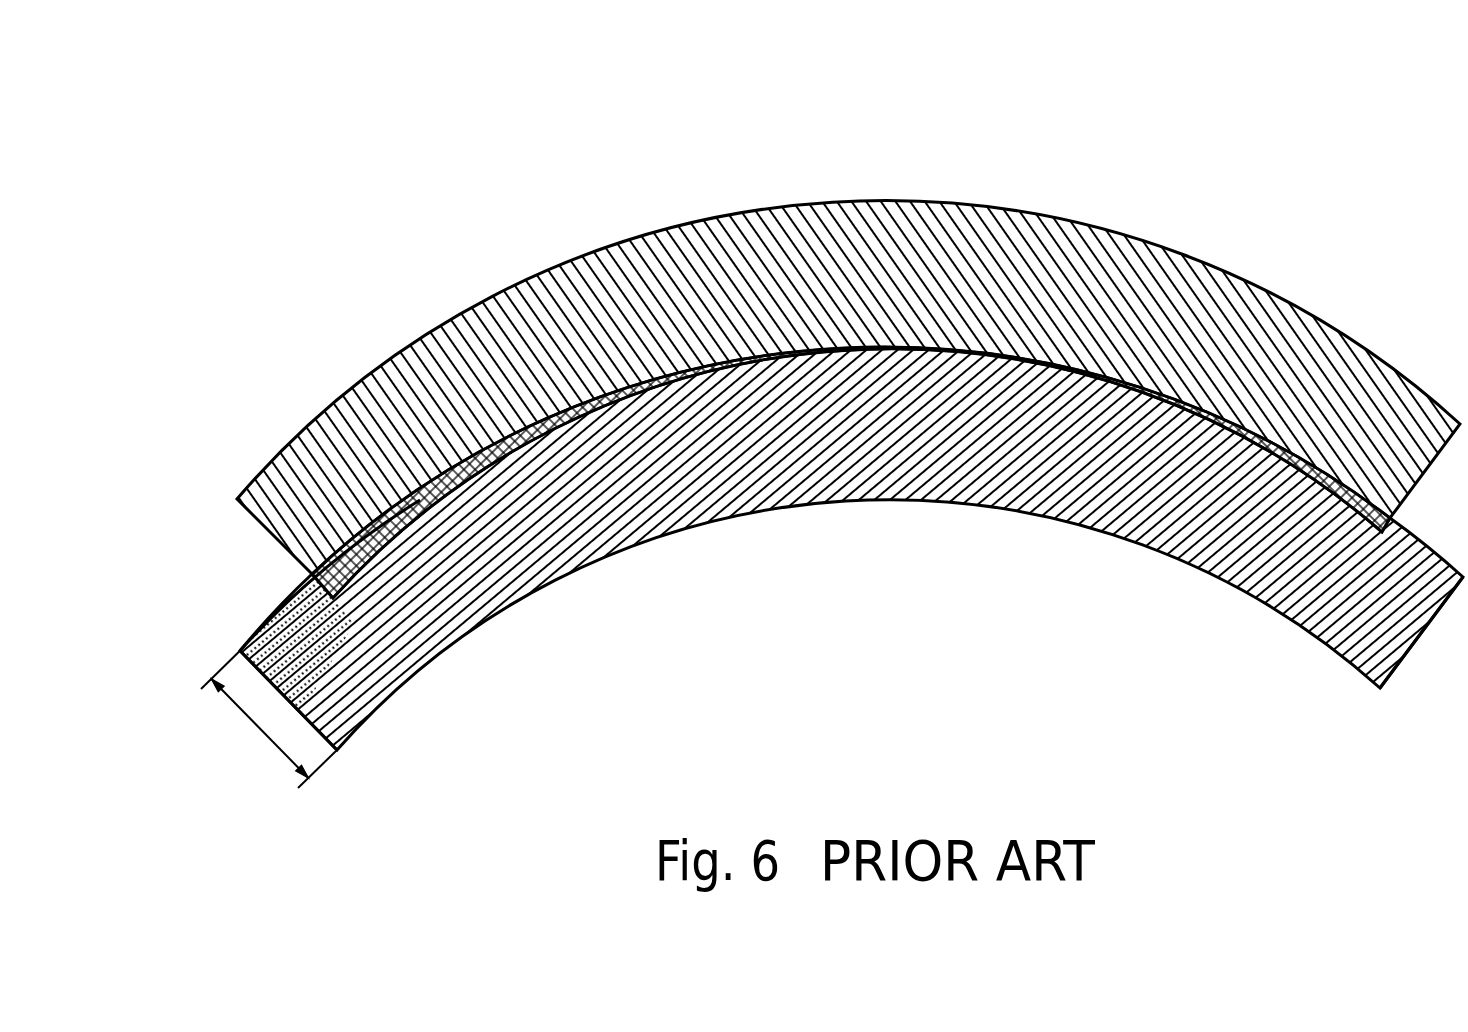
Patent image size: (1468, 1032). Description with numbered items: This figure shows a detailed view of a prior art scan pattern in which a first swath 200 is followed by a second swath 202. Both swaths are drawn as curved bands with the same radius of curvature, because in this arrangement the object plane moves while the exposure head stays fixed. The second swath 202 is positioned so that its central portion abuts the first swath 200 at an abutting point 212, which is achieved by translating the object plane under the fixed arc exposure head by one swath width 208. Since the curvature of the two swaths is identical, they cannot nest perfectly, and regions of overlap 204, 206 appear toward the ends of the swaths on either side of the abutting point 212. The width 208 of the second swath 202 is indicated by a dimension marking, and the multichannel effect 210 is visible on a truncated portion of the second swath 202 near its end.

The first swath 200 is at (780, 235).
The second swath 202 is at (785, 510).
The region of overlap 204 is at (380, 515).
The region of overlap 206 is at (1350, 547).
The width 208 is at (269, 719).
The multichannel effect 210 is at (253, 650).
The abutting point 212 is at (853, 347).